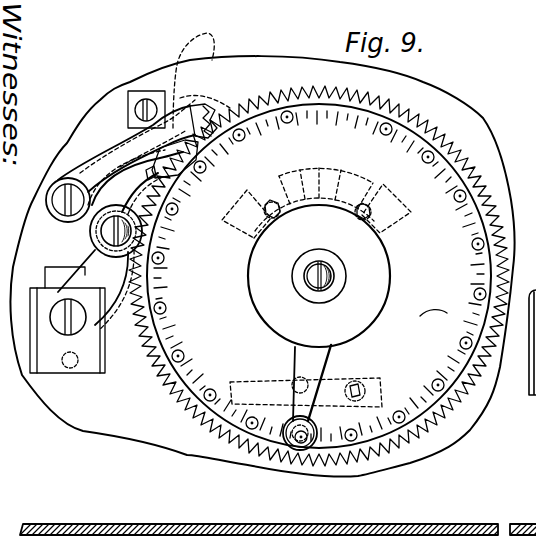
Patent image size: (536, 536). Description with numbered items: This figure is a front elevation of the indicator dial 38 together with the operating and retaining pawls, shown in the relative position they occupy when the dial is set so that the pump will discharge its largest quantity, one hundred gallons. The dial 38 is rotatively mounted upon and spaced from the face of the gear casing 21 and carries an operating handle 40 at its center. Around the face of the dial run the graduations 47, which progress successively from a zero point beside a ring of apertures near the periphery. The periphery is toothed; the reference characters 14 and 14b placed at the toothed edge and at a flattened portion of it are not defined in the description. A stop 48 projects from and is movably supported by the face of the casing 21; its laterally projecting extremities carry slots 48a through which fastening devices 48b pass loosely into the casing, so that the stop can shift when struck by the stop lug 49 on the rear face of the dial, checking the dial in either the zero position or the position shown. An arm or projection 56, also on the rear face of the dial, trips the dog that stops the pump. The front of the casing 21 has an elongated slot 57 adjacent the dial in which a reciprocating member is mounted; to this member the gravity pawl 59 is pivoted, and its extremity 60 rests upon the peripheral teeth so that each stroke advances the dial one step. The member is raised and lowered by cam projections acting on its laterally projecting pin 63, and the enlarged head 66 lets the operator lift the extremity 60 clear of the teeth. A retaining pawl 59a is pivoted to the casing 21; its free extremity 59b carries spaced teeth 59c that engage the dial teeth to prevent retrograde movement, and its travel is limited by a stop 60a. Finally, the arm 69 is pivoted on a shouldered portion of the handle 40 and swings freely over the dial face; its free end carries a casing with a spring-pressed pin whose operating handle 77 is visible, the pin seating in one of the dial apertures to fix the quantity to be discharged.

The graduated wheel 14 is at (481, 213).
The pawl 14b is at (175, 159).
The gear casing 21 is at (473, 114).
The indicator dial 38 is at (415, 288).
The operating handle 40 is at (272, 306).
The graduations 47 is at (440, 357).
The stop 48 is at (293, 203).
The slot 48a is at (352, 528).
The fastening devices 48b is at (334, 194).
The stop lug 49 is at (316, 196).
The arm or projection 56 is at (340, 383).
The elongated slot 57 is at (48, 353).
The pawl 59 is at (97, 294).
The retaining pawl 59a is at (100, 167).
The free extremity 59b is at (187, 114).
The spaced teeth 59c is at (217, 120).
The extremity 60 is at (152, 173).
The stop 60a is at (142, 104).
The pin 63 is at (81, 377).
The enlarged head 66 is at (90, 238).
The arm 69 is at (298, 349).
The operating handle 77 is at (302, 452).